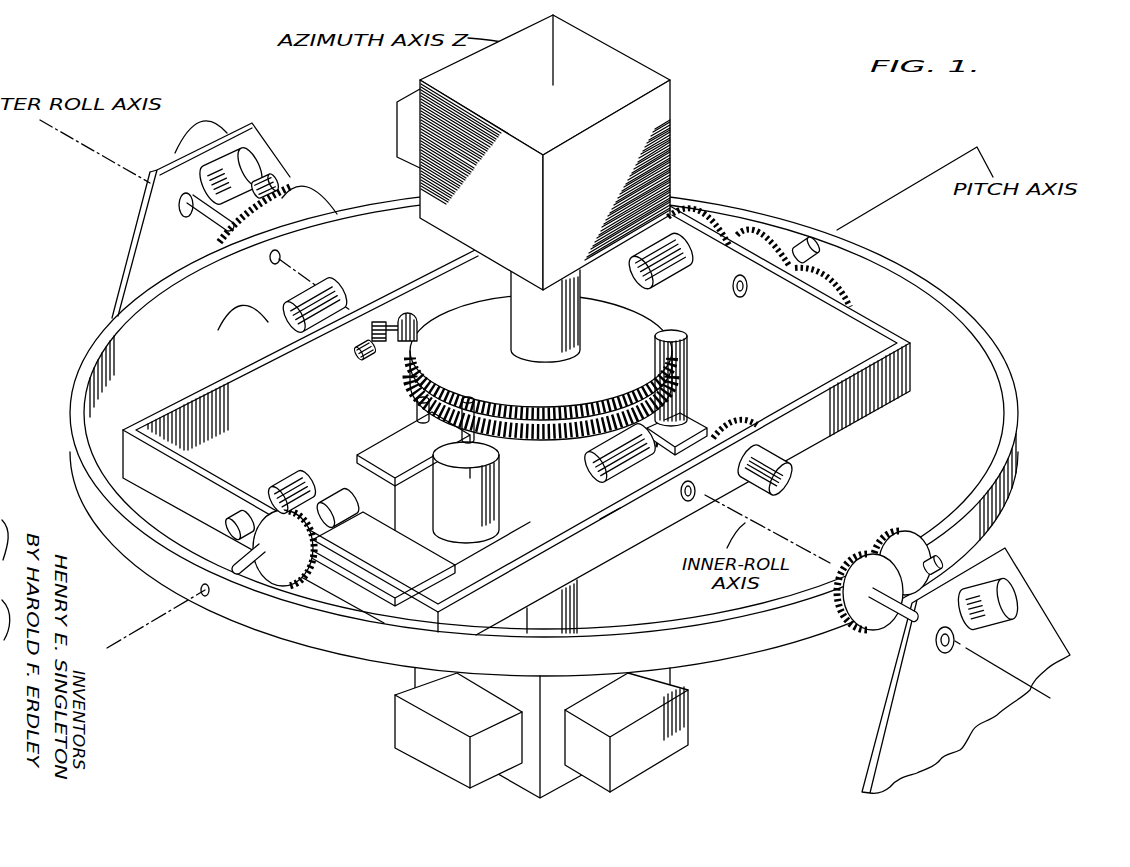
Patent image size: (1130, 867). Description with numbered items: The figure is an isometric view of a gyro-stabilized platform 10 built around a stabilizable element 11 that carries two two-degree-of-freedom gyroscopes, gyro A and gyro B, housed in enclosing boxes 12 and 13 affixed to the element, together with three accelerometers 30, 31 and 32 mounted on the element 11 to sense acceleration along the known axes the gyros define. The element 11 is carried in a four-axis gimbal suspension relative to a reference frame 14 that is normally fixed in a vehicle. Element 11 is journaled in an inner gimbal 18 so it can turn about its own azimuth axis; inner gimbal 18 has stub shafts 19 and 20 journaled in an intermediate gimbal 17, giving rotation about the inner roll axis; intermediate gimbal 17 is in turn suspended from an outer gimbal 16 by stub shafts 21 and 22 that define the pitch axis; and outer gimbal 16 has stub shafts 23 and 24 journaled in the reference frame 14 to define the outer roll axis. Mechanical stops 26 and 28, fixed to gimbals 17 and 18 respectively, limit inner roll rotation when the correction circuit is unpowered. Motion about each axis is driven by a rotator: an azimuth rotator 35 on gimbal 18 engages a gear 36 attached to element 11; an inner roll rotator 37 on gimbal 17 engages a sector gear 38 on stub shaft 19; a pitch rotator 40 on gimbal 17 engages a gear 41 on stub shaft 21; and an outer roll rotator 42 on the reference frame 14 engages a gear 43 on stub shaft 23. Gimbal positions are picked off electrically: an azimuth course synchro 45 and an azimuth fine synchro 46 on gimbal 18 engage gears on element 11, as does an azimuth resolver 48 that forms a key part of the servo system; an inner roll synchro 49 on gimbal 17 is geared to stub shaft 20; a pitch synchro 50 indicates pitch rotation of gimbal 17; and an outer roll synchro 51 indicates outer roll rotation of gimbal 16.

The gyro-stabilized platform 10 is at (801, 176).
The stabilizable element 11 is at (581, 325).
The enclosing box 12 is at (640, 70).
The enclosing box 13 is at (557, 773).
The reference frame 14 is at (142, 212).
The outer gimbal 16 is at (760, 633).
The intermediate gimbal 17 is at (903, 377).
The inner gimbal 18 is at (547, 503).
The stub shaft 19 is at (418, 327).
The stub shaft 20 is at (613, 447).
The stub shaft 21 is at (238, 577).
The stub shaft 22 is at (797, 247).
The stub shaft 23 is at (207, 220).
The stub shaft 24 is at (893, 617).
The mechanical stop 26 is at (370, 503).
The mechanical stop 28 is at (372, 446).
The accelerometer 30 is at (680, 723).
The accelerometer 31 is at (425, 740).
The accelerometer 32 is at (405, 118).
The azimuth rotator 35 is at (383, 540).
The gear 36 is at (530, 437).
The inner roll rotator 37 is at (290, 305).
The sector gear 38 is at (380, 322).
The pitch rotator 40 is at (287, 493).
The gear 41 is at (312, 565).
The outer roll rotator 42 is at (257, 100).
The gear 43 is at (312, 303).
The azimuth course synchro 45 is at (687, 384).
The azimuth fine synchro 46 is at (470, 522).
The azimuth resolver 48 is at (652, 402).
The inner roll synchro 49 is at (823, 487).
The pitch synchro 50 is at (673, 240).
The outer roll synchro 51 is at (1012, 590).